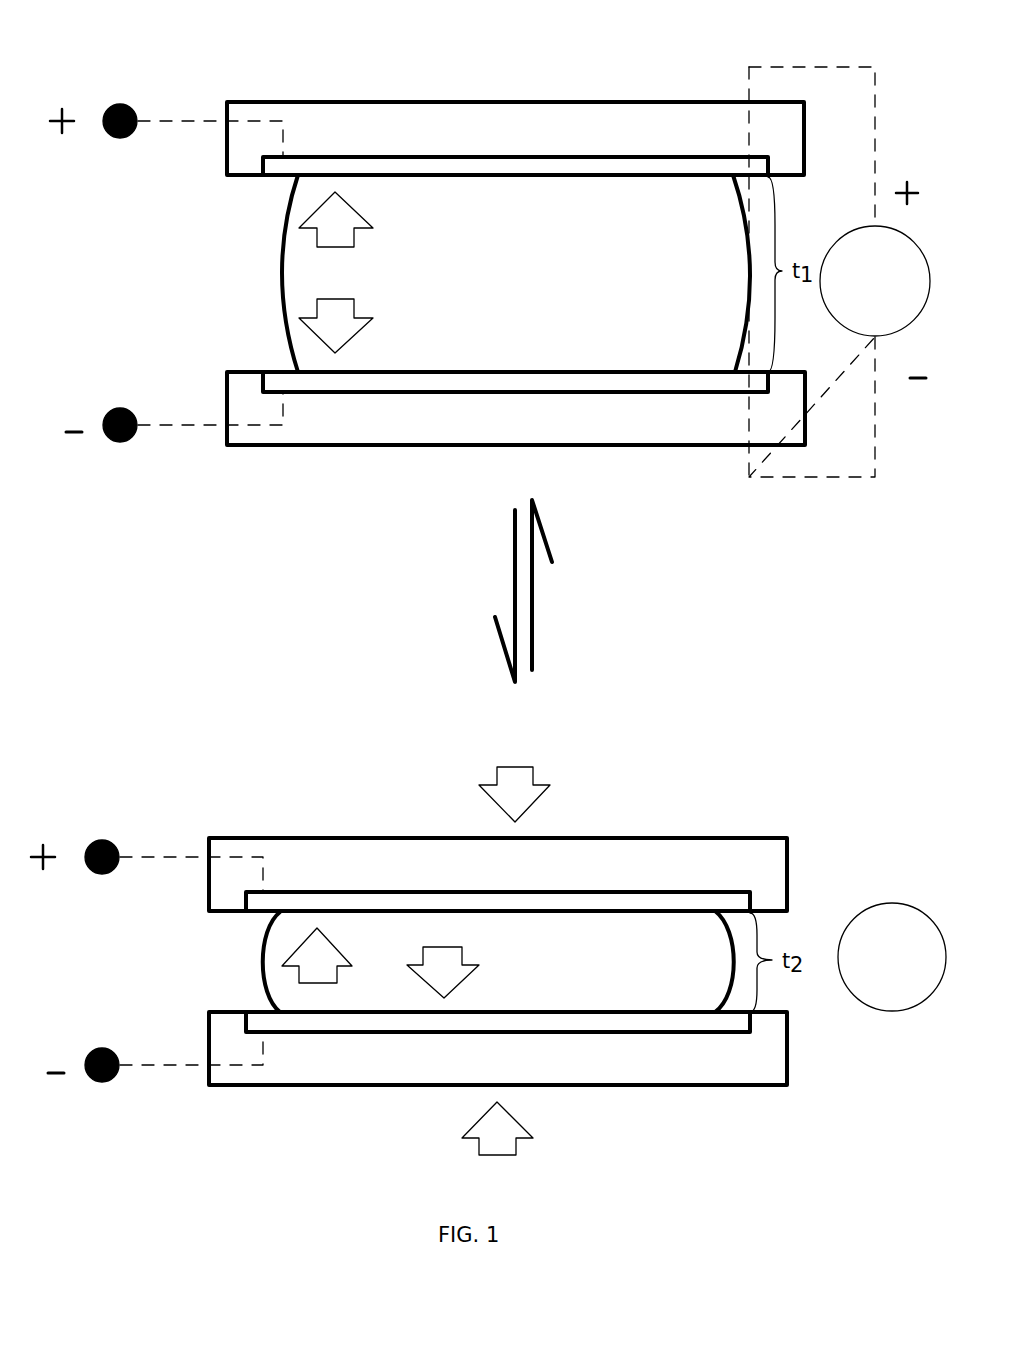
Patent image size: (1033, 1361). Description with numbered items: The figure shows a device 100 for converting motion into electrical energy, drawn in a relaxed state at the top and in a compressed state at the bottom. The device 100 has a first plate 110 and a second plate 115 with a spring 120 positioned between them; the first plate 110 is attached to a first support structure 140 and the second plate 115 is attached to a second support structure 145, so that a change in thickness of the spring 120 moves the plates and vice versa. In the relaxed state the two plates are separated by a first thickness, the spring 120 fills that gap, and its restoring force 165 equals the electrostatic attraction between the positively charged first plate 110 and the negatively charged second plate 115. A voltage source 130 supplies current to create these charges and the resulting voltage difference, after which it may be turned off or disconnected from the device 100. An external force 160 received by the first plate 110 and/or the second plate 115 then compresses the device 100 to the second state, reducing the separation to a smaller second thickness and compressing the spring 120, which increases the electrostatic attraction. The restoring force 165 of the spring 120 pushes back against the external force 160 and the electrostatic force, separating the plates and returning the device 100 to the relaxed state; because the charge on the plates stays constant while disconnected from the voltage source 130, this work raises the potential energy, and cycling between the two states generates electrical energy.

The device 100 is at (212, 45).
The first plate 110 is at (369, 167).
The second plate 115 is at (369, 380).
The spring 120 is at (698, 231).
The voltage source 130 is at (896, 286).
The first support structure 140 is at (407, 130).
The second support structure 145 is at (409, 413).
The external force 160 is at (536, 752).
The restoring force 165 is at (352, 282).